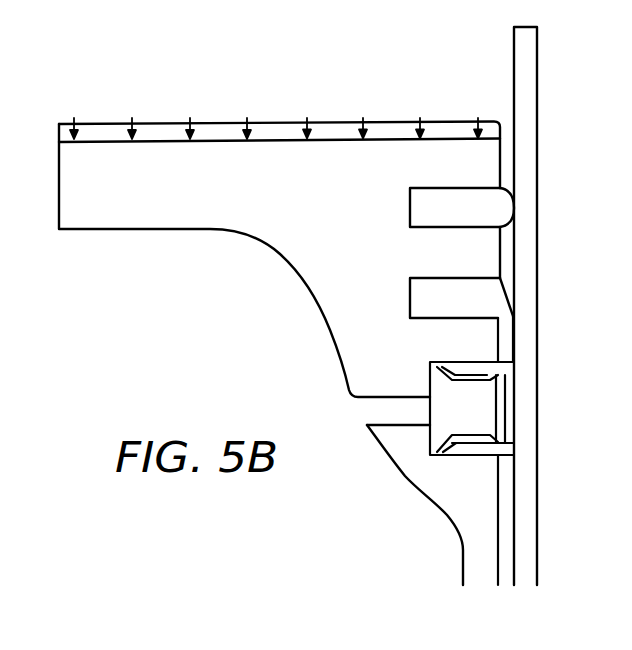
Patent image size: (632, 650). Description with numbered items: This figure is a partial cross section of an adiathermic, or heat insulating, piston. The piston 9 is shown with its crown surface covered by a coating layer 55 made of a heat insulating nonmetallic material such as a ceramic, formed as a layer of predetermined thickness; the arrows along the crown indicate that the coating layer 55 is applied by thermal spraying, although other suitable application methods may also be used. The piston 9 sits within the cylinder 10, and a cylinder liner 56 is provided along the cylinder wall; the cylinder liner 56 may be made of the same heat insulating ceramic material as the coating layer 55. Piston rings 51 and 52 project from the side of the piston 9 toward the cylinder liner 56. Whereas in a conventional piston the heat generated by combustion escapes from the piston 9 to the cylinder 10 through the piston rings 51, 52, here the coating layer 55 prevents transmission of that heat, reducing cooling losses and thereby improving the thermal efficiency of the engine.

The piston 9 is at (209, 222).
The cylinder 10 is at (610, 377).
The piston ring 51 is at (497, 210).
The piston ring 52 is at (490, 298).
The coating layer 55 is at (388, 128).
The cylinder liner 56 is at (525, 163).